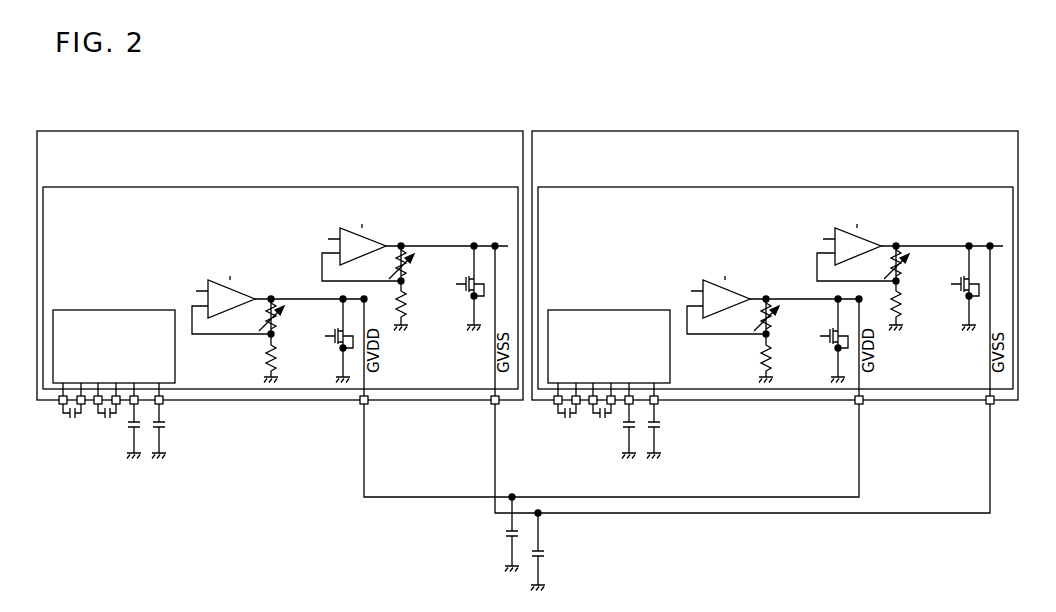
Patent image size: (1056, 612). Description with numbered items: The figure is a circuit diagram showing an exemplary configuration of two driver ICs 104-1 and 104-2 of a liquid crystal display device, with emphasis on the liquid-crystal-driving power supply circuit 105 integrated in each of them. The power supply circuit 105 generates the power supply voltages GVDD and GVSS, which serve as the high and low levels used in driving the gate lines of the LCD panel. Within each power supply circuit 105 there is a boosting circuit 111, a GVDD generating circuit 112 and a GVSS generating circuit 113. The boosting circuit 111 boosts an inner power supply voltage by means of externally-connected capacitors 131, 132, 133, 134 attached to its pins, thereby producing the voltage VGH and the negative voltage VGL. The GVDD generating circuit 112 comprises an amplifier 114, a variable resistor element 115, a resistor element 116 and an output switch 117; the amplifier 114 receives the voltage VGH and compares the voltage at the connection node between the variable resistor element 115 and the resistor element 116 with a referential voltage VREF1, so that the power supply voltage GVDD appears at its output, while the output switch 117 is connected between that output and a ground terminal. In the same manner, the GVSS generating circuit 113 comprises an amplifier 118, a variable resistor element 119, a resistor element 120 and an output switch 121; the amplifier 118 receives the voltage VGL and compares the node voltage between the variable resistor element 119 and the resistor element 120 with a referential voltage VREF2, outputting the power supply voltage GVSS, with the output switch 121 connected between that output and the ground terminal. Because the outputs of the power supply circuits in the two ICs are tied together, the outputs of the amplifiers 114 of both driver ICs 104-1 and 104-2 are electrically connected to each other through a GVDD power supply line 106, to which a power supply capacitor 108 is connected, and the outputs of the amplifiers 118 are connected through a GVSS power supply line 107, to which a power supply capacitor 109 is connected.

The driver IC 104-1 is at (766, 131).
The driver IC 104-2 is at (271, 131).
The liquid-crystal-driving power supply circuit 105 is at (269, 187).
The GVDD power supply line 106 is at (421, 497).
The GVSS power supply line 107 is at (752, 514).
The power supply capacitor 108 is at (506, 537).
The power supply capacitor 109 is at (546, 556).
The boosting circuit 111 is at (84, 310).
The GVDD generating circuit 112 is at (198, 276).
The GVSS generating circuit 113 is at (437, 243).
The amplifier 114 is at (258, 296).
The variable resistor element 115 is at (283, 319).
The resistor element 116 is at (264, 358).
The output switch 117 is at (334, 340).
The amplifier 118 is at (388, 243).
The variable resistor element 119 is at (409, 265).
The resistor element 120 is at (408, 312).
The output switch 121 is at (462, 284).
The externally-connected capacitor 131 is at (75, 419).
The externally-connected capacitor 132 is at (107, 420).
The externally-connected capacitor 133 is at (140, 430).
The externally-connected capacitor 134 is at (165, 428).